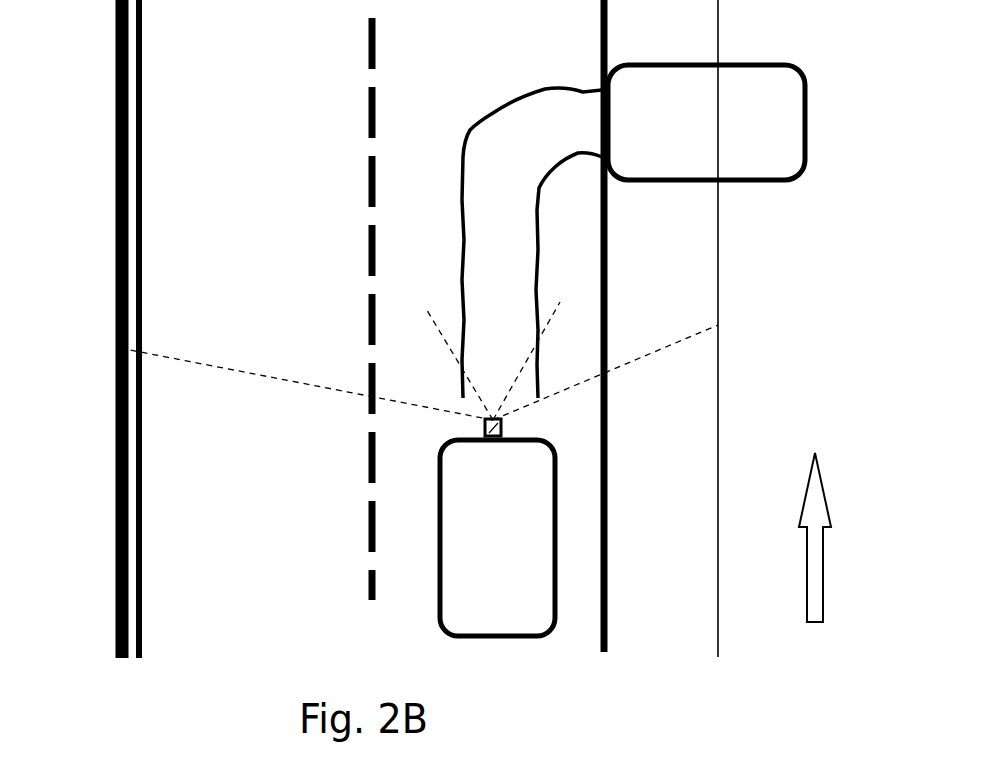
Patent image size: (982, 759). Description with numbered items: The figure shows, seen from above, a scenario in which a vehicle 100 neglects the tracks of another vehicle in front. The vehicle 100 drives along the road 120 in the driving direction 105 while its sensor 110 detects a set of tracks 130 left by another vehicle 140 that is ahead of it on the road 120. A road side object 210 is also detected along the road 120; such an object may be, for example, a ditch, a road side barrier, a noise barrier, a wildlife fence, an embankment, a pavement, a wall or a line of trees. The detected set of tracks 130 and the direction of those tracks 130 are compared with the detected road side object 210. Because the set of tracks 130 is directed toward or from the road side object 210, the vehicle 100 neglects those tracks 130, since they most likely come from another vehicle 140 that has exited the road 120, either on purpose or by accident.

The vehicle 100 is at (521, 550).
The driving direction 105 is at (843, 537).
The sensor 110 is at (502, 432).
The road 120 is at (567, 33).
The set of tracks 130 is at (464, 229).
The another vehicle 140 is at (730, 136).
The road side object 210 is at (115, 22).